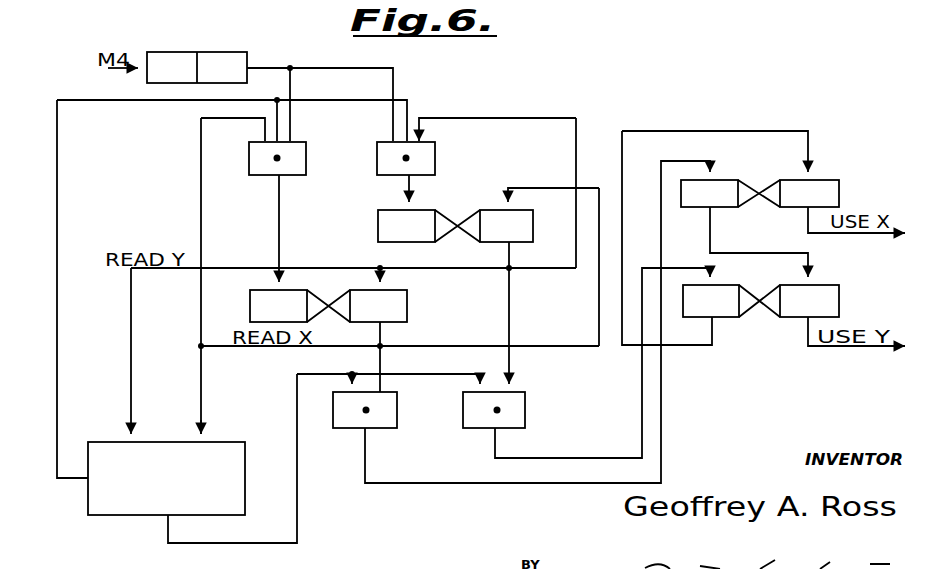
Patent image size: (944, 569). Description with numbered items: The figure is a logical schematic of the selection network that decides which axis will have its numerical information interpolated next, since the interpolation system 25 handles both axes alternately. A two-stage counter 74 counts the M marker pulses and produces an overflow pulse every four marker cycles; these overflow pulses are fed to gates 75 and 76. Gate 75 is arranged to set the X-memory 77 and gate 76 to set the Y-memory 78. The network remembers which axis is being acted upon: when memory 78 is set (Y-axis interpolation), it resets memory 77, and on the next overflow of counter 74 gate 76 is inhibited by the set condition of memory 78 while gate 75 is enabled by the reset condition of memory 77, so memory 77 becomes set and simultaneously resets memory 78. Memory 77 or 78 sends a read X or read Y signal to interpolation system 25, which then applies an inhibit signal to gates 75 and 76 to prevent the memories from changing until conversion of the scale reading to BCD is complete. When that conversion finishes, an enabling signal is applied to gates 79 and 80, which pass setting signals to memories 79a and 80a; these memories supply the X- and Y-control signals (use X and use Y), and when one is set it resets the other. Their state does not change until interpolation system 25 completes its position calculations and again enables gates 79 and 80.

The two-stage counter 74 is at (215, 52).
The gate 75 is at (306, 160).
The gate 76 is at (435, 162).
The X-memory 77 is at (407, 307).
The Y-memory 78 is at (533, 230).
The gate 79 is at (397, 414).
The gate 80 is at (525, 413).
The memory 79a is at (838, 178).
The memory 80a is at (839, 298).
The interpolation system 25 is at (246, 445).